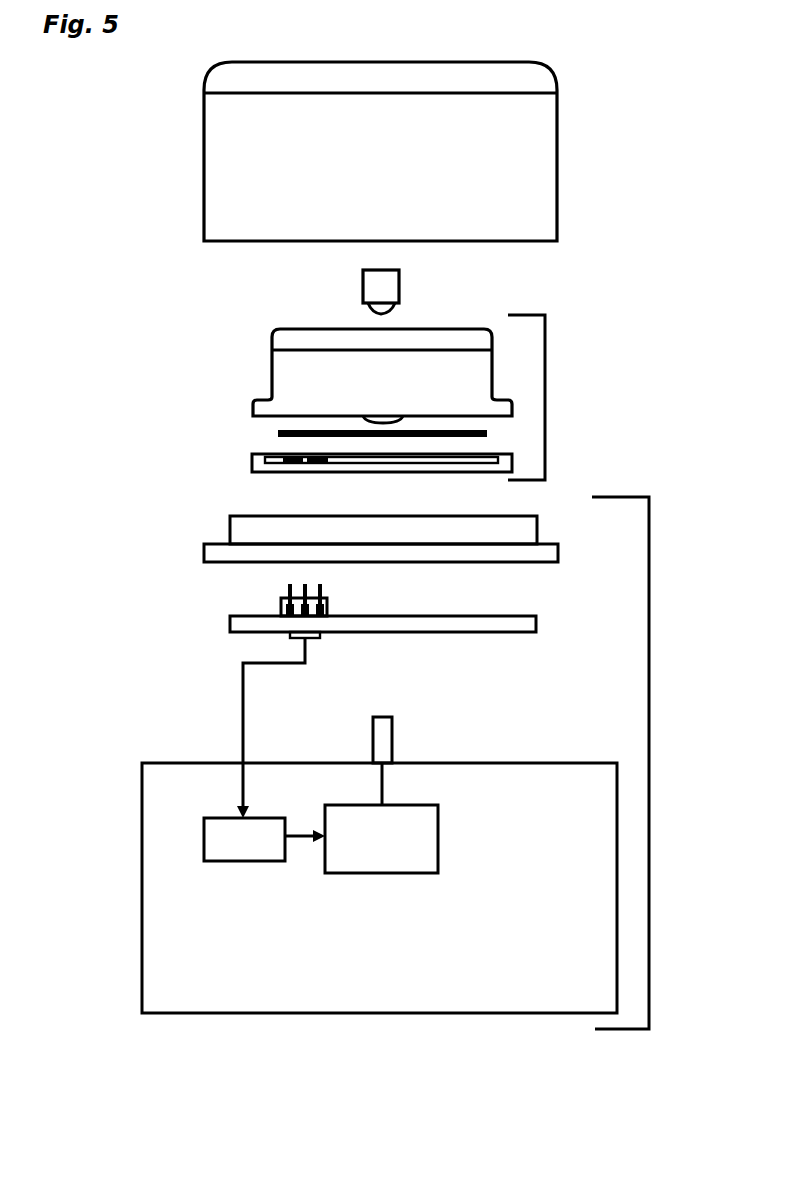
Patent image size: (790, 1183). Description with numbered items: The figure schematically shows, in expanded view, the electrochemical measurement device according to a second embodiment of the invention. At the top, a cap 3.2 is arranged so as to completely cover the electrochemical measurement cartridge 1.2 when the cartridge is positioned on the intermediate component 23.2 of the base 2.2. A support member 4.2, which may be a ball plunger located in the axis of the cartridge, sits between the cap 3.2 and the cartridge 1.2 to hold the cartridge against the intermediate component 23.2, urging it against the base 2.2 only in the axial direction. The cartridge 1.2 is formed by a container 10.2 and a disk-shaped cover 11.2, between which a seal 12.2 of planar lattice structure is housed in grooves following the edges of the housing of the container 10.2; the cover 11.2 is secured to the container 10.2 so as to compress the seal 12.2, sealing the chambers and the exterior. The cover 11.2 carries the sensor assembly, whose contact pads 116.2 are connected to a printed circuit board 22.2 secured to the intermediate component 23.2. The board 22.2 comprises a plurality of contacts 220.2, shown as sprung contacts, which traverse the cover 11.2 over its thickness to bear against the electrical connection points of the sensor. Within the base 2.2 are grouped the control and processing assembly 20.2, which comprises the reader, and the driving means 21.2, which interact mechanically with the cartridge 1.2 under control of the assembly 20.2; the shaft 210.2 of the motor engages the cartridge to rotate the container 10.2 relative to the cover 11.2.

The cap 3.2 is at (557, 143).
The support member 4.2 is at (399, 290).
The electrochemical measurement cartridge 1.2 is at (370, 403).
The container 10.2 is at (270, 366).
The seal 12.2 is at (278, 433).
The cover 11.2 is at (252, 463).
The contact pads 116.2 is at (292, 458).
The base 2.2 is at (416, 763).
The intermediate component 23.2 is at (230, 533).
The printed circuit board 22.2 is at (230, 622).
The contacts 220.2 is at (327, 600).
The shaft of the motor 210.2 is at (388, 735).
The control and processing assembly 20.2 is at (244, 839).
The driving means 21.2 is at (381, 839).